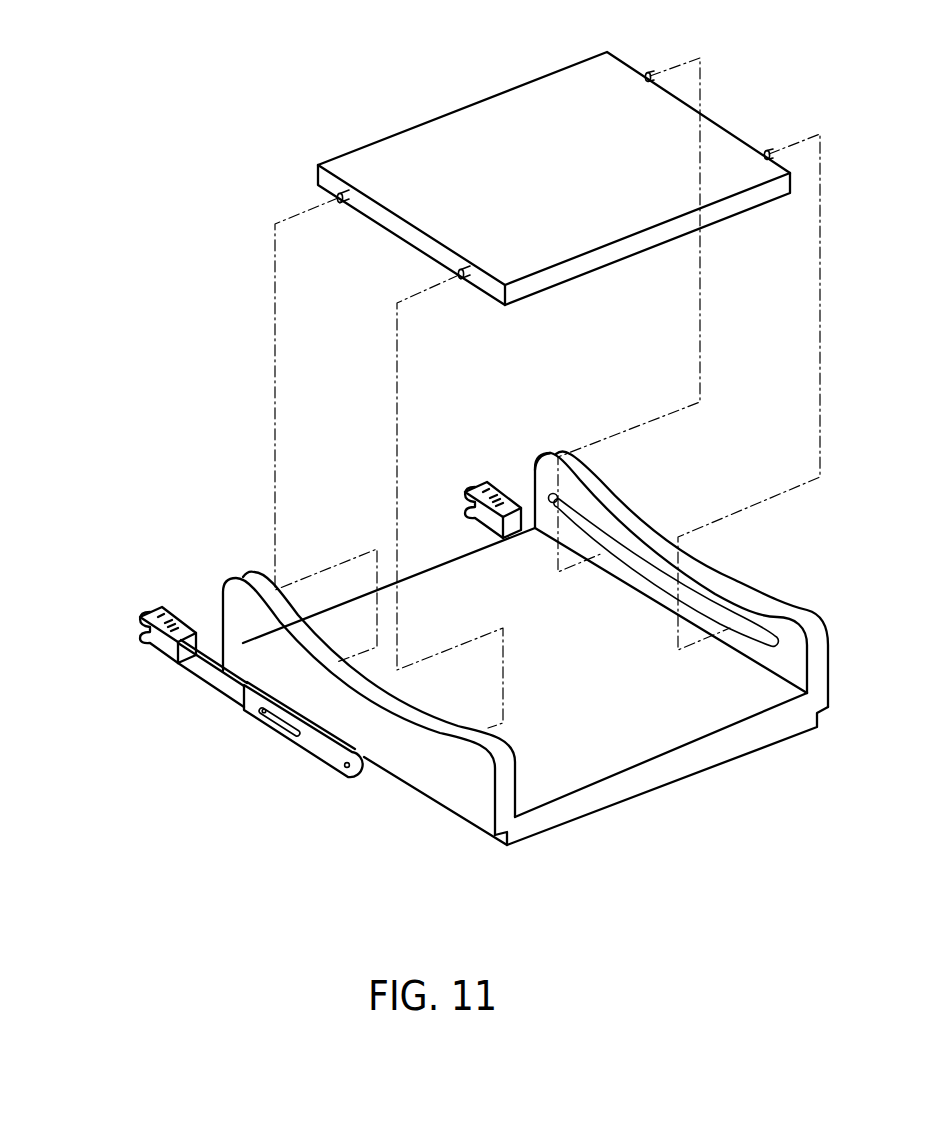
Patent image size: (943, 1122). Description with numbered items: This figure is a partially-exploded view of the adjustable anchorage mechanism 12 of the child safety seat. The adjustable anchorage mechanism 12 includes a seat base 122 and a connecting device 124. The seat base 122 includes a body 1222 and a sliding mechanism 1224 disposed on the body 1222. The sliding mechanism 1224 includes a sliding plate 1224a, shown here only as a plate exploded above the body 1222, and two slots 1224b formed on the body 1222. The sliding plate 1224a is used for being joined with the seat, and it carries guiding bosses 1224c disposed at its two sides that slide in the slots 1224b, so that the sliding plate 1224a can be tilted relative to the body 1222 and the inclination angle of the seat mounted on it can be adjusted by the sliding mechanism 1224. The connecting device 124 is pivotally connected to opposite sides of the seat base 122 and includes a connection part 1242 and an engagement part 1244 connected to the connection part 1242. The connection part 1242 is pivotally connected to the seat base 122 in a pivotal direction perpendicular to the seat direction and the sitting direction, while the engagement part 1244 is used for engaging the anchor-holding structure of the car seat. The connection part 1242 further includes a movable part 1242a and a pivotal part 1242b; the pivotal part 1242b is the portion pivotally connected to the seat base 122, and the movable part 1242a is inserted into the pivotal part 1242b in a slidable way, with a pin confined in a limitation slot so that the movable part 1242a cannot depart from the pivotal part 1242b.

The adjustable anchorage mechanism 12 is at (211, 82).
The seat base 122 is at (100, 368).
The body 1222 is at (453, 585).
The sliding mechanism 1224 is at (182, 323).
The sliding plate 1224a is at (565, 275).
The slots 1224b is at (533, 477).
The guiding bosses 1224c is at (455, 268).
The connecting device 124 is at (263, 847).
The engagement part 1244 is at (163, 648).
The connection part 1242 is at (322, 790).
The movable part 1242a is at (218, 680).
The pivotal part 1242b is at (312, 745).